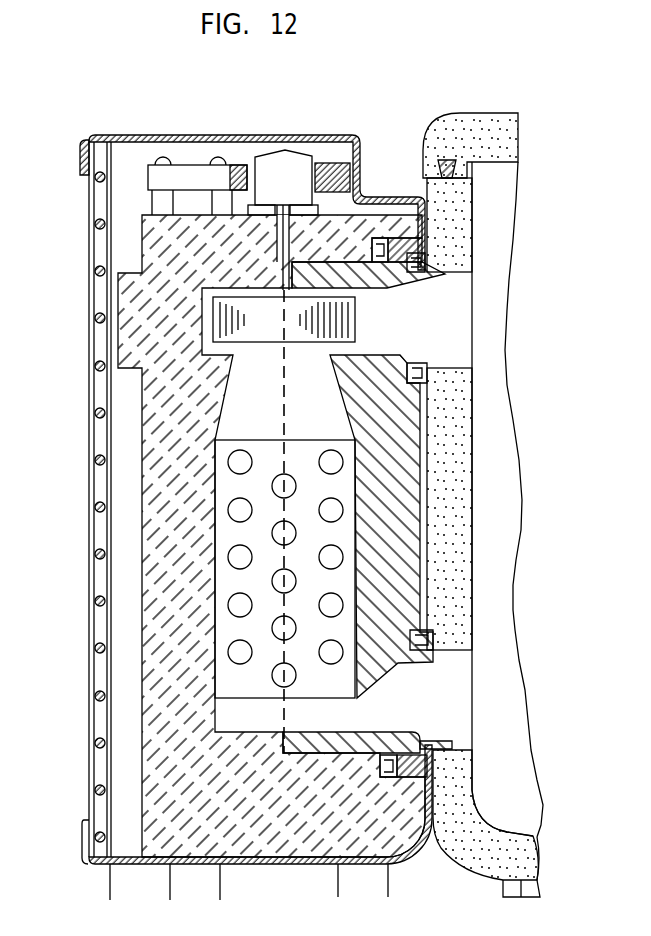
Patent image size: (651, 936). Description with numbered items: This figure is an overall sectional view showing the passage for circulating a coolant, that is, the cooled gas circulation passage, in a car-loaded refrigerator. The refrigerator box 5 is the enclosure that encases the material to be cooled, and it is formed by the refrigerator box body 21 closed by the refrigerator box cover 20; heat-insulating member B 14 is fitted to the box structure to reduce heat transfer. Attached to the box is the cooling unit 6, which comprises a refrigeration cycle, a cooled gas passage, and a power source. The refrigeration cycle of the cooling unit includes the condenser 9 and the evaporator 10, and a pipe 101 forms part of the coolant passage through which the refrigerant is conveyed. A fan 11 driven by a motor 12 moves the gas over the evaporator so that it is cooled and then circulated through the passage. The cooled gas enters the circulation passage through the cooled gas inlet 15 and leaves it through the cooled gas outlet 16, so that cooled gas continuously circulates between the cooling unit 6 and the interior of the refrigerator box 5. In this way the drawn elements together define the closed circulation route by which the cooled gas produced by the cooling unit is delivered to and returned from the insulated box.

The refrigerator box 5 is at (505, 190).
The cooling unit 6 is at (140, 135).
The condenser 9 is at (95, 325).
The evaporator 10 is at (285, 544).
The pipe 101 is at (240, 451).
The fan 11 is at (263, 335).
The motor 12 is at (288, 160).
The heat-insulating member B 14 is at (400, 462).
The cooled gas inlet 15 is at (157, 437).
The cooled gas outlet 16 is at (440, 695).
The refrigerator box cover 20 is at (480, 113).
The refrigerator box body 21 is at (463, 240).